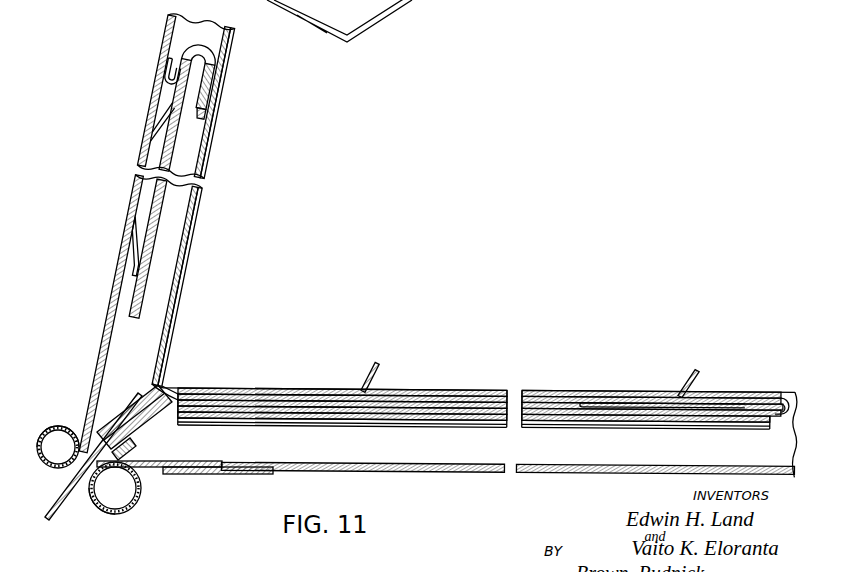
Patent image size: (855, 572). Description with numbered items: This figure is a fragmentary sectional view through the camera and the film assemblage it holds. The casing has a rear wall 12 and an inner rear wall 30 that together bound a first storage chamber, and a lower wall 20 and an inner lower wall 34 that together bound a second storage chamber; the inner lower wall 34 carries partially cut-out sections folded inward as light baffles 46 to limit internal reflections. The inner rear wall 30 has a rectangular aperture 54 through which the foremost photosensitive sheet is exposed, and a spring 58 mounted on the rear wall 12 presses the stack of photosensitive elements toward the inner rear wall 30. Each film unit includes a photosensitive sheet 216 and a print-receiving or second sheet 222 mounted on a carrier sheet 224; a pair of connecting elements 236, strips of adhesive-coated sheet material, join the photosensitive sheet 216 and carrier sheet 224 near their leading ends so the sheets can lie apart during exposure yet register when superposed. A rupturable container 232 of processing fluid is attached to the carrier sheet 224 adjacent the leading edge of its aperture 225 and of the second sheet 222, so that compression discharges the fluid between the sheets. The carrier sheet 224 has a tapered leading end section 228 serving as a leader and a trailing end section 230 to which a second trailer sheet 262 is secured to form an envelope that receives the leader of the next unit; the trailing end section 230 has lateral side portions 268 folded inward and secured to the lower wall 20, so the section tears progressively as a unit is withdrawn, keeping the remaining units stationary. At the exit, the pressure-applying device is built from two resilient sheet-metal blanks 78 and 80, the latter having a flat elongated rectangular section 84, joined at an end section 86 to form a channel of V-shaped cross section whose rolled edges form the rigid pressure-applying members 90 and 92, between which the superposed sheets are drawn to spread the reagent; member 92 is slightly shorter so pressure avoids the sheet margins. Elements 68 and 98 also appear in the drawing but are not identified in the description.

The rear wall 12 is at (131, 197).
The lower wall 20 is at (447, 470).
The inner rear wall 30 is at (166, 370).
The inner lower wall 34 is at (548, 390).
The light baffles 46 is at (374, 360).
The rectangular aperture 54 is at (168, 362).
The spring 58 is at (146, 138).
The sheet 68 is at (404, 423).
The blank 78 is at (63, 422).
The blank 80 is at (120, 523).
The elongated rectangular section 84 is at (147, 472).
The end section 86 is at (104, 386).
The pressure-applying member 90 is at (50, 437).
The pressure-applying member 92 is at (104, 512).
The rib 98 is at (207, 474).
The photosensitive sheet 216 is at (191, 236).
The second sheet 222 is at (314, 398).
The carrier sheet 224 is at (762, 413).
The aperture 225 is at (208, 412).
The leading end section 228 is at (421, 396).
The trailing end section 230 is at (391, 398).
The rupturable container 232 is at (167, 383).
The connecting elements 236 is at (118, 392).
The second trailer sheet 262 is at (600, 397).
The lateral side portions 268 is at (372, 16).